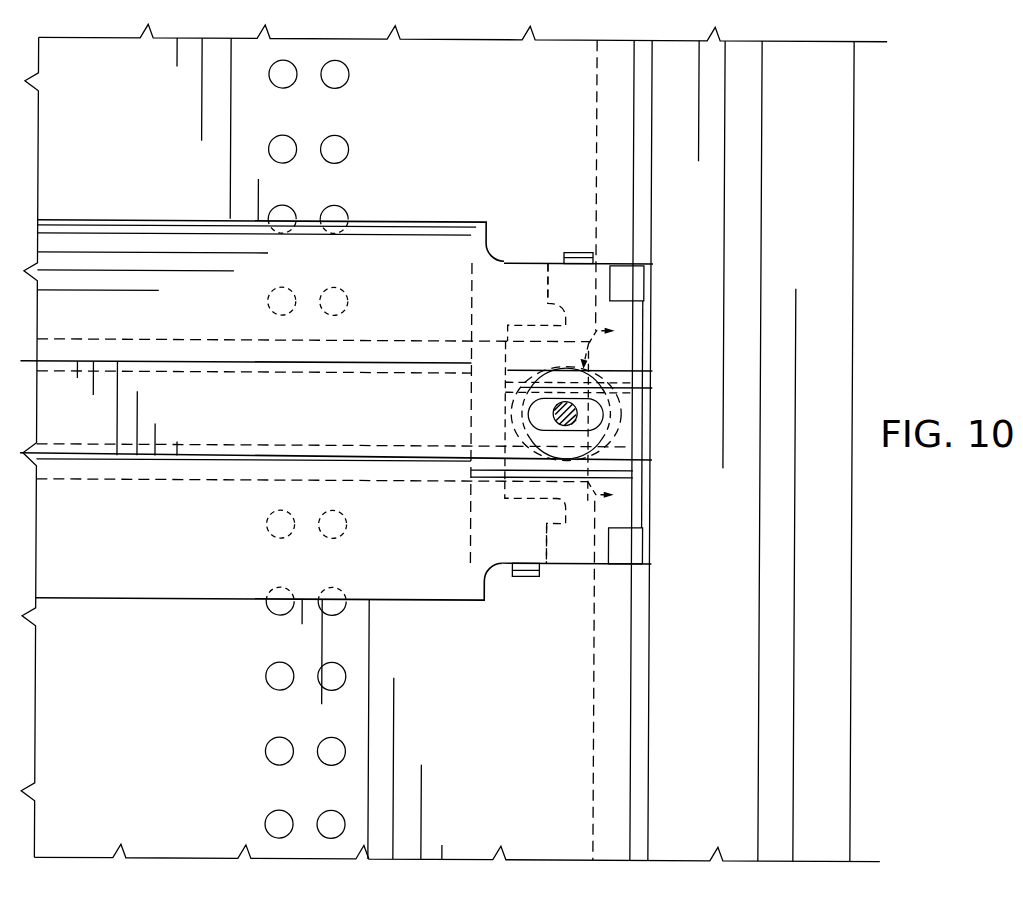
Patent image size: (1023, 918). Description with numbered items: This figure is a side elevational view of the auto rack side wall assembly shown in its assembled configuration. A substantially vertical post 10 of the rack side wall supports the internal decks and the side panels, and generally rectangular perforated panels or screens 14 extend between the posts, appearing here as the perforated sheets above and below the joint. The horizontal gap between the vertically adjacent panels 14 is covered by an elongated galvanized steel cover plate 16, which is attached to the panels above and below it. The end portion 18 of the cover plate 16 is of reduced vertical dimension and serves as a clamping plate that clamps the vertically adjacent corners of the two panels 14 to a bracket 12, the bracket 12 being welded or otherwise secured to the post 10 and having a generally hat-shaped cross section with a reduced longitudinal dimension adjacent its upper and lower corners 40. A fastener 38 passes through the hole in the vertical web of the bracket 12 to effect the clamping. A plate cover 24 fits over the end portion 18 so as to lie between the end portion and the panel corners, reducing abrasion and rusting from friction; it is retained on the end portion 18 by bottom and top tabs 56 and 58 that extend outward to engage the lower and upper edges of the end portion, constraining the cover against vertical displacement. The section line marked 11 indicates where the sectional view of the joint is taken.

The vertical post 10 is at (823, 117).
The section line 11- 11 is at (437, 212).
The bracket 12 is at (535, 542).
The perforated panel 14 is at (441, 52).
The cover plate 16 is at (88, 333).
The end portion 18 is at (517, 261).
The plate cover 24 is at (470, 293).
The fastener 38 is at (528, 410).
The upper and lower corners 40 is at (556, 255).
The bottom tab 56 is at (525, 578).
The top tab 58 is at (577, 252).